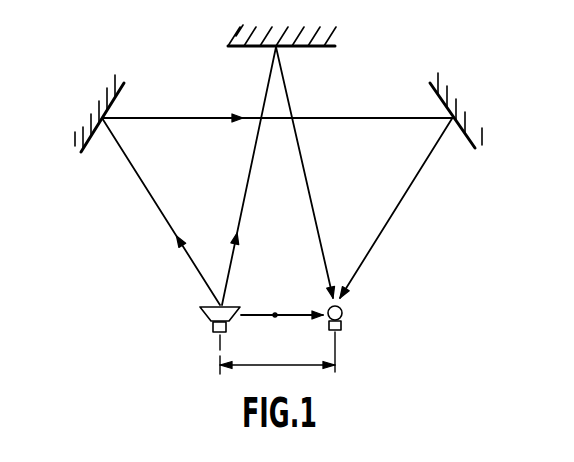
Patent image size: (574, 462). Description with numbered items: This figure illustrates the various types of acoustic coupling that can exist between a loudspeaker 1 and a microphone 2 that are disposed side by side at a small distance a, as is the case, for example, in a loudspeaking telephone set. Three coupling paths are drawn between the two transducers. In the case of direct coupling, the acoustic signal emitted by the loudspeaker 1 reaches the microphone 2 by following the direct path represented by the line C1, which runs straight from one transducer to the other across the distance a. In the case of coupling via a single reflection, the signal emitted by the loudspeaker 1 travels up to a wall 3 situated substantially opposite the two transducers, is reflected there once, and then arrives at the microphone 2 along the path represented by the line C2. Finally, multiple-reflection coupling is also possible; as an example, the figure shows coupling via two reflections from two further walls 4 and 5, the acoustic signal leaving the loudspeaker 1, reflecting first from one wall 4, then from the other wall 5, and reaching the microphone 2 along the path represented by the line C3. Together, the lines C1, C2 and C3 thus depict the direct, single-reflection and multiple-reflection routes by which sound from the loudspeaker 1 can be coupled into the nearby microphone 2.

The loudspeaker 1 is at (209, 320).
The microphone 2 is at (343, 324).
The wall 3 is at (242, 47).
The wall 4 is at (119, 85).
The wall 5 is at (433, 91).
The direct path C1 is at (252, 293).
The single-reflection path C2 is at (312, 202).
The multiple-reflection path C3 is at (392, 212).
The distance a is at (277, 353).